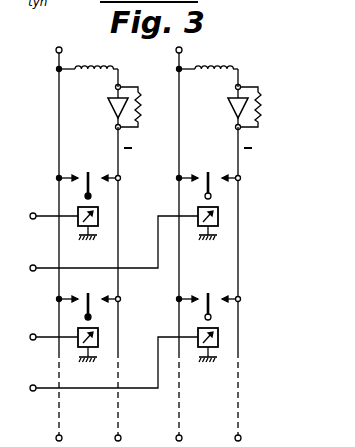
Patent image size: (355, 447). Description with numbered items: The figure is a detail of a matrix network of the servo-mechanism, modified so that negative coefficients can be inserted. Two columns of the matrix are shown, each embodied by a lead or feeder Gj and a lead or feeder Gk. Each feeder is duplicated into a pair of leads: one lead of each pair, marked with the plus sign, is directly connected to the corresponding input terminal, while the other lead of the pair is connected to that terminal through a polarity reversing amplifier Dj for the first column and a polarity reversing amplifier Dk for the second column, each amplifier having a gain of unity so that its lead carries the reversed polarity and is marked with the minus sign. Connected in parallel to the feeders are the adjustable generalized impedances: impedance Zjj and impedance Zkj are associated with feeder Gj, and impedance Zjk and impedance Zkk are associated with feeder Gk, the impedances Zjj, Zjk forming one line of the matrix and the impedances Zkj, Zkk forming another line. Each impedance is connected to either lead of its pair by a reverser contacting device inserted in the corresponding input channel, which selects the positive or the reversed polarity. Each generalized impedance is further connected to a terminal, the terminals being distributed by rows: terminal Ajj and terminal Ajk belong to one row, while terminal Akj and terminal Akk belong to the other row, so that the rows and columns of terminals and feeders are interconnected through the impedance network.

The lead or feeder Gj is at (76, 65).
The lead or feeder Gk is at (196, 65).
The polarity reversing amplifier Dj is at (109, 117).
The polarity reversing amplifier Dk is at (228, 117).
The generalized impedance Zjj is at (89, 206).
The generalized impedance Zjk is at (209, 206).
The generalized impedance Zkj is at (90, 327).
The generalized impedance Zkk is at (212, 327).
The terminal Ajj is at (42, 203).
The terminal Ajk is at (103, 243).
The terminal Akj is at (43, 328).
The terminal Akk is at (103, 364).